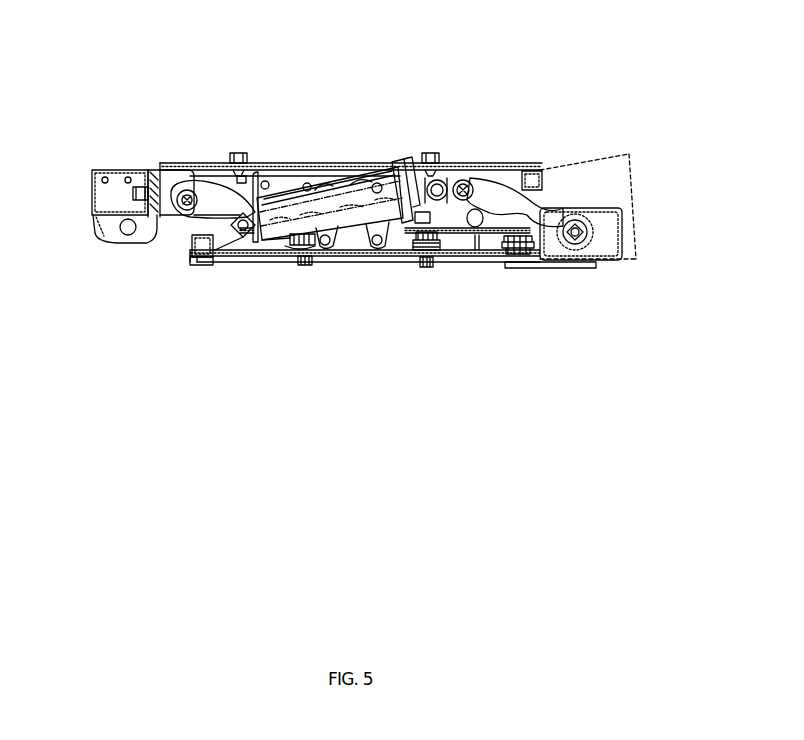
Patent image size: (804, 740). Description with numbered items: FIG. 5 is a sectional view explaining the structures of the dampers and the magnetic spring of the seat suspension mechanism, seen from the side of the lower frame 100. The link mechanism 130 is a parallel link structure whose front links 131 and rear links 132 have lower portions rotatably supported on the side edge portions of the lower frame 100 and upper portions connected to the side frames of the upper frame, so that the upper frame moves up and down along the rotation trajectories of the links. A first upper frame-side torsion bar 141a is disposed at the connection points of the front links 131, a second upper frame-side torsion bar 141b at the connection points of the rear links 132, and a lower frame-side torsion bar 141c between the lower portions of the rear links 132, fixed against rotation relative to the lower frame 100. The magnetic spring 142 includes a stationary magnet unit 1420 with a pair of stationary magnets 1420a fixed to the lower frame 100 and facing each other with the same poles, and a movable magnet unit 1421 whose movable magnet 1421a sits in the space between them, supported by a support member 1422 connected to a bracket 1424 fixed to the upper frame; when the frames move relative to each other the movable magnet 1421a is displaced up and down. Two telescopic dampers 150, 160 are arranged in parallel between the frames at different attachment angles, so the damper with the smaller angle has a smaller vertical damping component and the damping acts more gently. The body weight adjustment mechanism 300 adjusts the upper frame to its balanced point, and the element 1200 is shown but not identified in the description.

The lower frame 100 is at (588, 204).
The front link 131 is at (200, 170).
The first upper frame-side torsion bar 141a is at (166, 248).
The damper 150 is at (265, 258).
The magnetic spring 142 is at (356, 176).
The stationary magnet unit 1420 is at (332, 176).
The stationary magnet 1420a is at (305, 182).
The bracket 1424 is at (262, 174).
The mounting plate 1200 is at (370, 160).
The damper 160 is at (393, 158).
The body weight adjustment mechanism 300 is at (460, 160).
The link mechanism 130 is at (485, 172).
The second upper frame-side torsion bar 141b is at (476, 250).
The rear link 132 is at (505, 256).
The lower frame-side torsion bar 141c is at (572, 262).
The support member 1422 is at (396, 256).
The movable magnet unit 1421 is at (350, 252).
The movable magnet 1421a is at (336, 251).